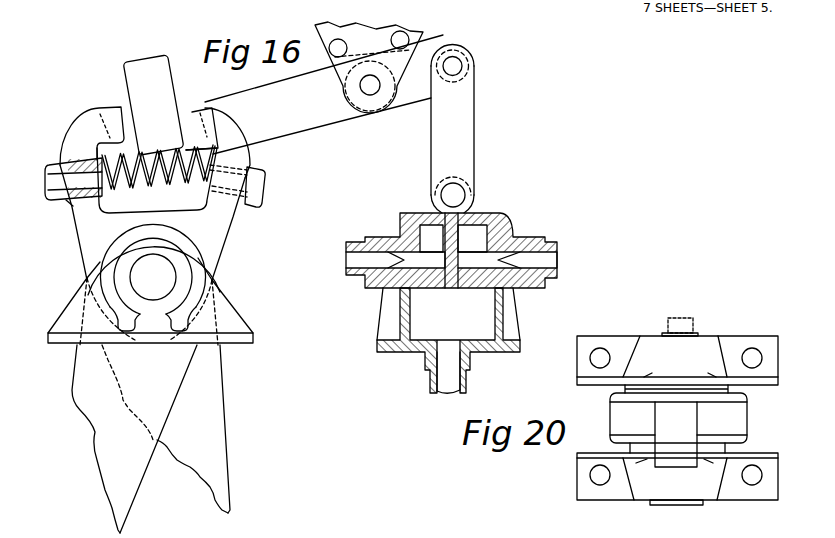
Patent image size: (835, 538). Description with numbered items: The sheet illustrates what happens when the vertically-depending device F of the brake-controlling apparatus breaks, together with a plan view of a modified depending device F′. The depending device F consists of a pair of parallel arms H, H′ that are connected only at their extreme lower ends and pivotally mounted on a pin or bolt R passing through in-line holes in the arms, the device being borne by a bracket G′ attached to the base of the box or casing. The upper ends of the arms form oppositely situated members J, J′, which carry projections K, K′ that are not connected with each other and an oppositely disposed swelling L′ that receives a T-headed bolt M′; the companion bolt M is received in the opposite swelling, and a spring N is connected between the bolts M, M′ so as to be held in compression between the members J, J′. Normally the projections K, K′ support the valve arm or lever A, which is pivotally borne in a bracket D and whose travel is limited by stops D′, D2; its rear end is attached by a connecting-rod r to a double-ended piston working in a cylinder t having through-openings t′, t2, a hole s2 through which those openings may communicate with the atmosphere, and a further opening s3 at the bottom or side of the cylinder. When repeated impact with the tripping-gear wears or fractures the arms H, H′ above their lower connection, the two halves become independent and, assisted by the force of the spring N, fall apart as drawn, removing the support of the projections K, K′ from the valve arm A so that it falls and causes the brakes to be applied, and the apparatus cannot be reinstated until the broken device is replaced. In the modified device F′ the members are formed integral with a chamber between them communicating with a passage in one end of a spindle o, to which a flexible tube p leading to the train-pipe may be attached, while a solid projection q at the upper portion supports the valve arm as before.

In FIG. 16, the projection K is at (112, 118).
In FIG. 16, the projection K′ is at (199, 114).
In FIG. 16, the T-headed bolt M′ is at (90, 160).
In FIG. 16, the T-headed bolt M is at (262, 150).
In FIG. 16, the spring N is at (191, 201).
In FIG. 16, the swelling L′ is at (72, 202).
In FIG. 16, the member J′ is at (82, 257).
In FIG. 16, the member J is at (228, 218).
In FIG. 16, the pin or bolt R is at (153, 276).
In FIG. 16, the bracket G′ is at (230, 313).
In FIG. 20, the bracket G′ is at (600, 380).
In FIG. 16, the vertically-depending device F is at (150, 354).
In FIG. 16, the arm H′ is at (112, 439).
In FIG. 16, the arm H is at (175, 439).
In FIG. 16, the valve arm or lever A is at (324, 94).
In FIG. 16, the bracket D is at (369, 67).
In FIG. 16, the stop D2 is at (334, 50).
In FIG. 16, the stop D′ is at (408, 38).
In FIG. 16, the connecting-rod r is at (452, 139).
In FIG. 16, the cylinder t is at (512, 227).
In FIG. 16, the through-opening t′ is at (402, 258).
In FIG. 16, the through-opening t2 is at (533, 287).
In FIG. 16, the hole s2 is at (424, 222).
In FIG. 16, the opening s3 is at (449, 350).
In FIG. 20, the flexible tube p is at (694, 320).
In FIG. 20, the depending device F′ is at (748, 417).
In FIG. 20, the solid projection q is at (676, 434).
In FIG. 20, the spindle o is at (595, 412).